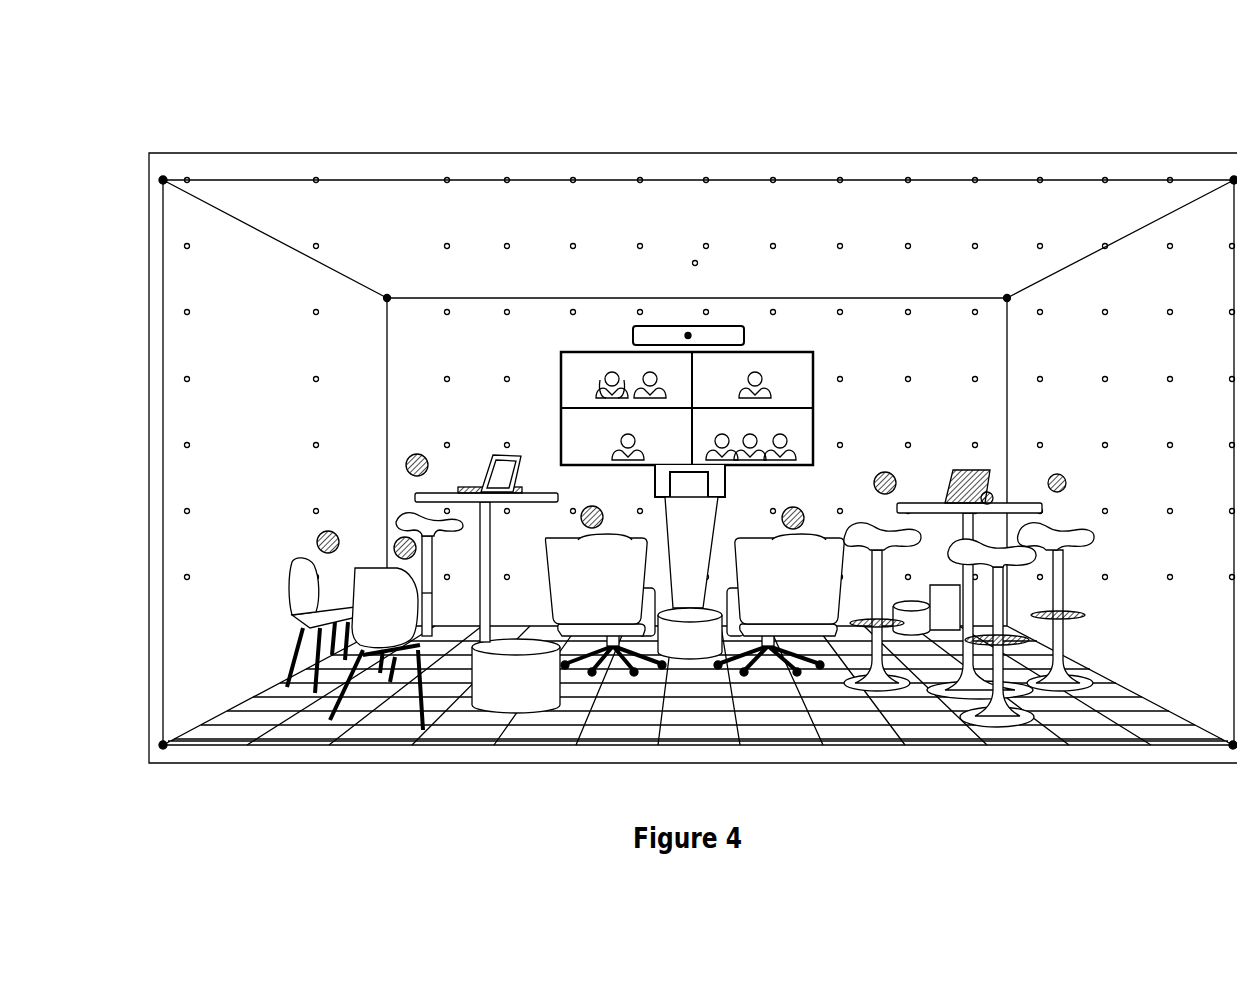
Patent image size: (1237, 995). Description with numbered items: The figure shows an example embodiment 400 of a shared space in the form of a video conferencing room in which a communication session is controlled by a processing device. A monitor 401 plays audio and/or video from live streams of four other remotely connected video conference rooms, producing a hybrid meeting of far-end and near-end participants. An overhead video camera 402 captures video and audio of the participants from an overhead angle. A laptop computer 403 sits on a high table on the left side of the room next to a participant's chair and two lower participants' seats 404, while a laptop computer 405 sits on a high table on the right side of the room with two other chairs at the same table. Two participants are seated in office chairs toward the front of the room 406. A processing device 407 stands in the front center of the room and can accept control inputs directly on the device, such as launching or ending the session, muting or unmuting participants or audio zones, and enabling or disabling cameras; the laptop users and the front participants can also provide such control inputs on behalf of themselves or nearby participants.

The example embodiment 400 is at (703, 62).
The monitor 401 is at (797, 382).
The overhead video camera 402 is at (737, 330).
The laptop computer 403 is at (410, 460).
The lower participants' seats 404 is at (320, 538).
The laptop computer 405 is at (980, 512).
The participants seated in office chairs toward the front of the room 406 is at (795, 530).
The processing device 407 is at (663, 468).